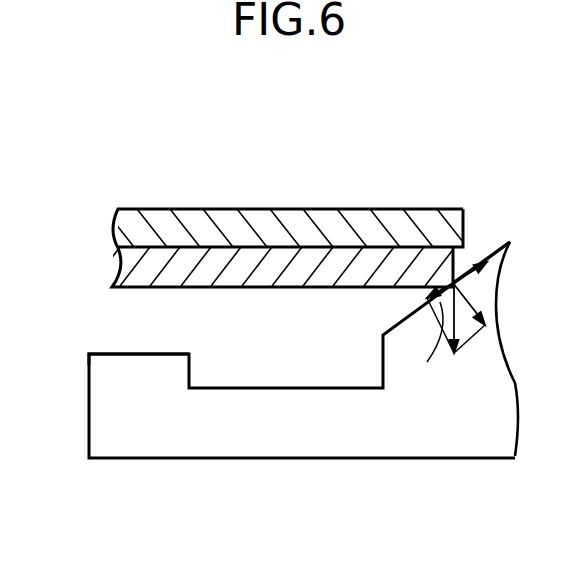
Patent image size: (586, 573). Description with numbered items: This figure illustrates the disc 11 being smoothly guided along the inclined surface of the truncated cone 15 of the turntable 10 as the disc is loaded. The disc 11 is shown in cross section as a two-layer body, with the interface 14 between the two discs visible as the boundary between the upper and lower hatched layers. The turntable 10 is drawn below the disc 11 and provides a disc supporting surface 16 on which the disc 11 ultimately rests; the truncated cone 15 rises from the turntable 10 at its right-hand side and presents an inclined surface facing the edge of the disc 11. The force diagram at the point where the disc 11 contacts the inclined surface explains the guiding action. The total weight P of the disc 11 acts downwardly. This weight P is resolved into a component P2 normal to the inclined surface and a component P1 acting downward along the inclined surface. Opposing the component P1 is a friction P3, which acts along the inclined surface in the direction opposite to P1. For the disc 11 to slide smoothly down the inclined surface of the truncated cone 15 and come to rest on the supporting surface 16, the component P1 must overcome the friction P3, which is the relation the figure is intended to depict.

The turntable 10 is at (266, 390).
The disc 11 is at (276, 218).
The interface 14 is at (379, 218).
The truncated cone 15 is at (500, 236).
The disc supporting surface 16 is at (130, 354).
The total weight P is at (474, 347).
The component acting downward along the inclined surface P1 is at (440, 297).
The component normal to the inclined surface P2 is at (474, 306).
The friction P3 is at (478, 281).